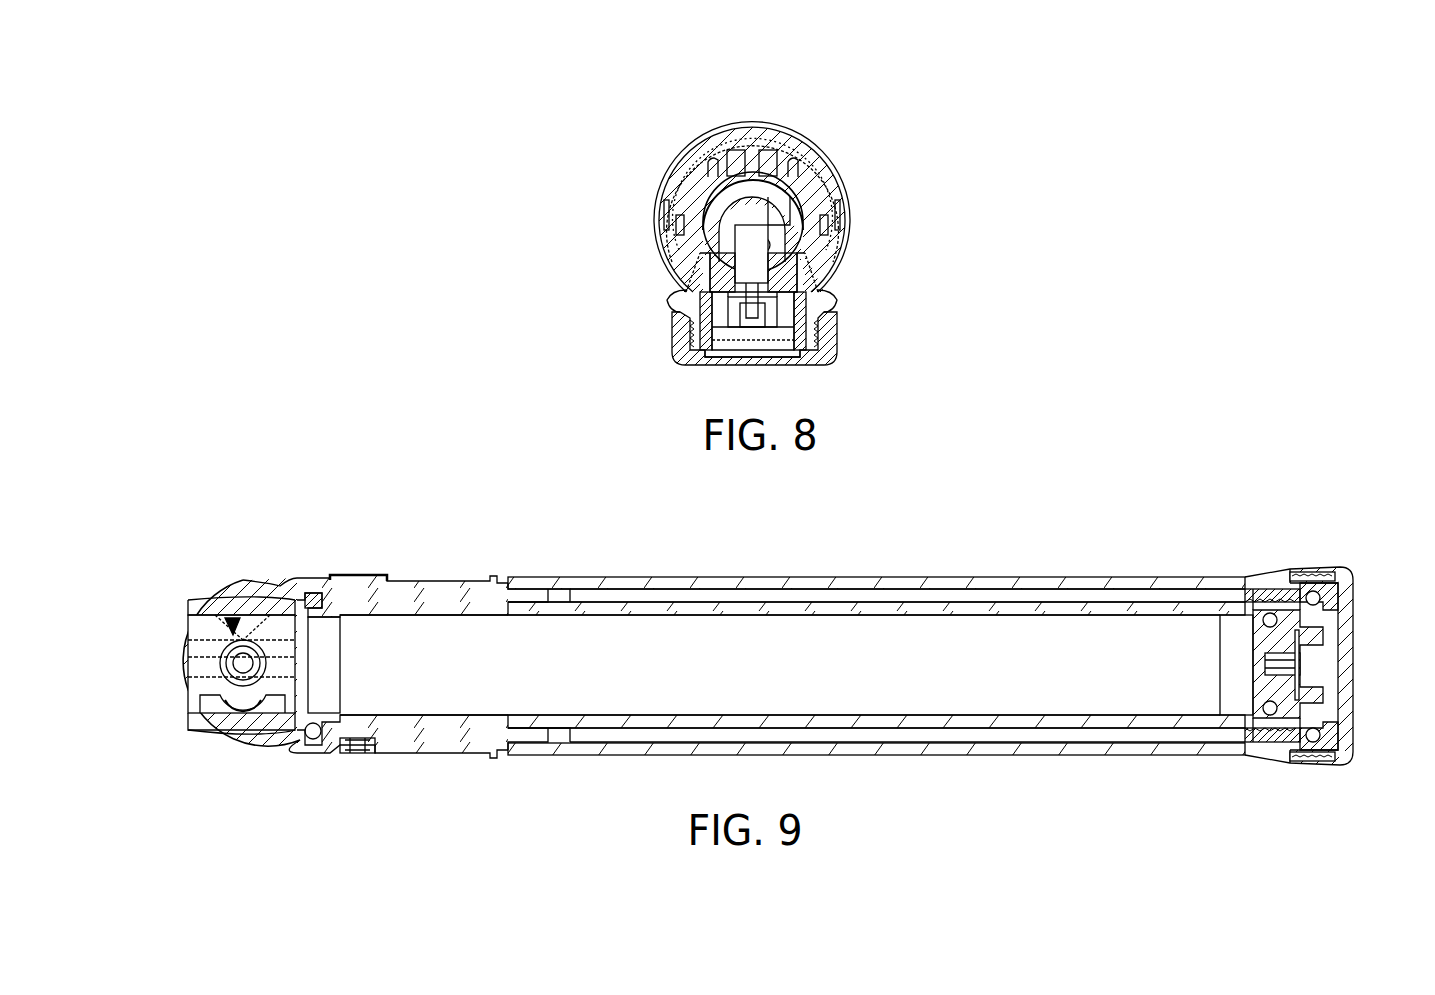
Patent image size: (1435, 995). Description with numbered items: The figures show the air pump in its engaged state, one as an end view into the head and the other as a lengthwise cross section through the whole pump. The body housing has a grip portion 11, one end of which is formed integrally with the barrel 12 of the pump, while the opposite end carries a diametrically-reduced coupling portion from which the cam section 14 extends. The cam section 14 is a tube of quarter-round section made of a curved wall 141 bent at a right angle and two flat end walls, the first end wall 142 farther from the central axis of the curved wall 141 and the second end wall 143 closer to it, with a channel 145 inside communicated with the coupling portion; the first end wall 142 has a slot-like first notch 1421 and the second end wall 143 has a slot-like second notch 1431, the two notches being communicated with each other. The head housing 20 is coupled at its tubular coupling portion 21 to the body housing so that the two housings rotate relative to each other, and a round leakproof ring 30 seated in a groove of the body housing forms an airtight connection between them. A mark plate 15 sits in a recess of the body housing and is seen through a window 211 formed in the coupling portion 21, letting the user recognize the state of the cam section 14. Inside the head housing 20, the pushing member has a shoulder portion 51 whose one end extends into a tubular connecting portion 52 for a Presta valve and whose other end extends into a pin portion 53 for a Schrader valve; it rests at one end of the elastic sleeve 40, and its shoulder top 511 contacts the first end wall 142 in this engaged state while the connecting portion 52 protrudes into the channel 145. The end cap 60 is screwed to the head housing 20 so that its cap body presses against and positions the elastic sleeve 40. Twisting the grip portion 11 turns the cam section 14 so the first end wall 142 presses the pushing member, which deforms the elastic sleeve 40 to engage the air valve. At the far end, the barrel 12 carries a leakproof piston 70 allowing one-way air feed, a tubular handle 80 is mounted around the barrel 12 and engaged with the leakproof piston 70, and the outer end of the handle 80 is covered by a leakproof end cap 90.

In FIG. 8, the head housing 20 is at (779, 118).
In FIG. 9, the head housing 20 is at (152, 690).
In FIG. 8, the cam section 14 is at (705, 205).
In FIG. 8, the curved wall 141 is at (713, 175).
In FIG. 8, the first end wall 142 is at (712, 280).
In FIG. 9, the first end wall 142 is at (205, 633).
In FIG. 8, the second end wall 143 is at (777, 197).
In FIG. 9, the second end wall 143 is at (200, 735).
In FIG. 8, the second notch 1431 is at (772, 210).
In FIG. 8, the channel 145 is at (745, 197).
In FIG. 9, the first notch 1421 is at (232, 616).
In FIG. 8, the connecting portion 52 is at (773, 237).
In FIG. 9, the connecting portion 52 is at (245, 640).
In FIG. 8, the shoulder portion 51 is at (802, 270).
In FIG. 9, the shoulder top 511 is at (235, 715).
In FIG. 8, the pin portion 53 is at (757, 312).
In FIG. 8, the elastic sleeve 40 is at (723, 325).
In FIG. 8, the end cap 60 is at (703, 362).
In FIG. 9, the leakproof ring 30 is at (315, 598).
In FIG. 9, the coupling portion 21 is at (352, 578).
In FIG. 9, the window 211 is at (365, 752).
In FIG. 9, the mark plate 15 is at (350, 750).
In FIG. 9, the grip portion 11 is at (435, 583).
In FIG. 9, the barrel 12 is at (1062, 600).
In FIG. 9, the handle 80 is at (1153, 577).
In FIG. 9, the leakproof piston 70 is at (1290, 592).
In FIG. 9, the leakproof end cap 90 is at (1368, 600).